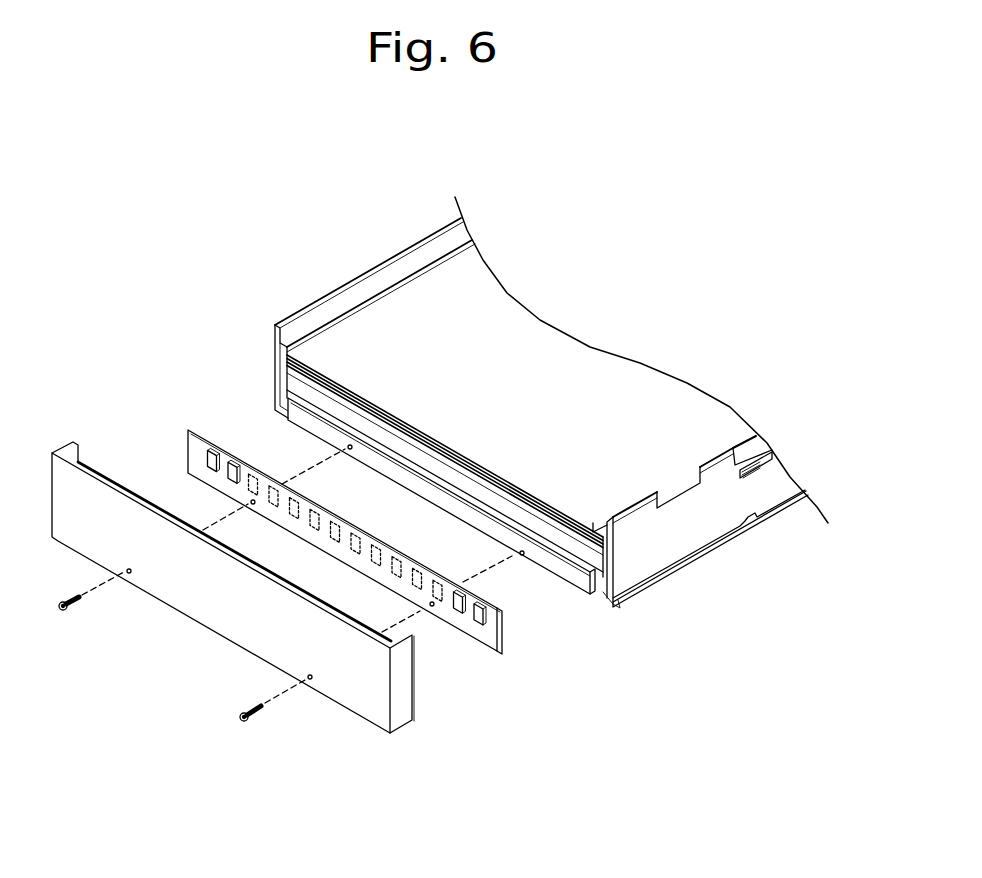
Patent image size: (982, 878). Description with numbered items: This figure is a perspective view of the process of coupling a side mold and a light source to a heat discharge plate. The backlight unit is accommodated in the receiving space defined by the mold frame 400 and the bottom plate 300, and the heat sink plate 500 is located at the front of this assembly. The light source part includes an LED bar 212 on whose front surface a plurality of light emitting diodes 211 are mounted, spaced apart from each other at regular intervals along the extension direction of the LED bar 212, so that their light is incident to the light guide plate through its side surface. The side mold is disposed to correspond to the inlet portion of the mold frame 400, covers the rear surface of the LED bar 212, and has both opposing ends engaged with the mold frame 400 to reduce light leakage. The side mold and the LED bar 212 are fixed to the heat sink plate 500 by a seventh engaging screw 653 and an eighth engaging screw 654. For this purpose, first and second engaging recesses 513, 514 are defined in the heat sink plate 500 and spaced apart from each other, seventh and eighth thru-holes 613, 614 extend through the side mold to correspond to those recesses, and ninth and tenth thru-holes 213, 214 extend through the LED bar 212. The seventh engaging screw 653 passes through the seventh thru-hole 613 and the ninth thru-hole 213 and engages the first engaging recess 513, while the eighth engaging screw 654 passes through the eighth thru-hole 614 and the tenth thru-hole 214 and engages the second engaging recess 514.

The light emitting diode 211 is at (208, 455).
The LED bar 212 is at (308, 539).
The ninth thru-hole 213 is at (432, 604).
The tenth thru-hole 214 is at (253, 503).
The bottom plate 300 is at (672, 578).
The mold frame 400 is at (690, 530).
The heat sink plate 500 is at (612, 598).
The first engaging recess 513 is at (522, 553).
The second engaging recess 514 is at (350, 447).
The seventh thru-hole 613 is at (310, 677).
The eighth thru-hole 614 is at (130, 571).
The seventh engaging screw 653 is at (250, 722).
The eighth engaging screw 654 is at (70, 612).